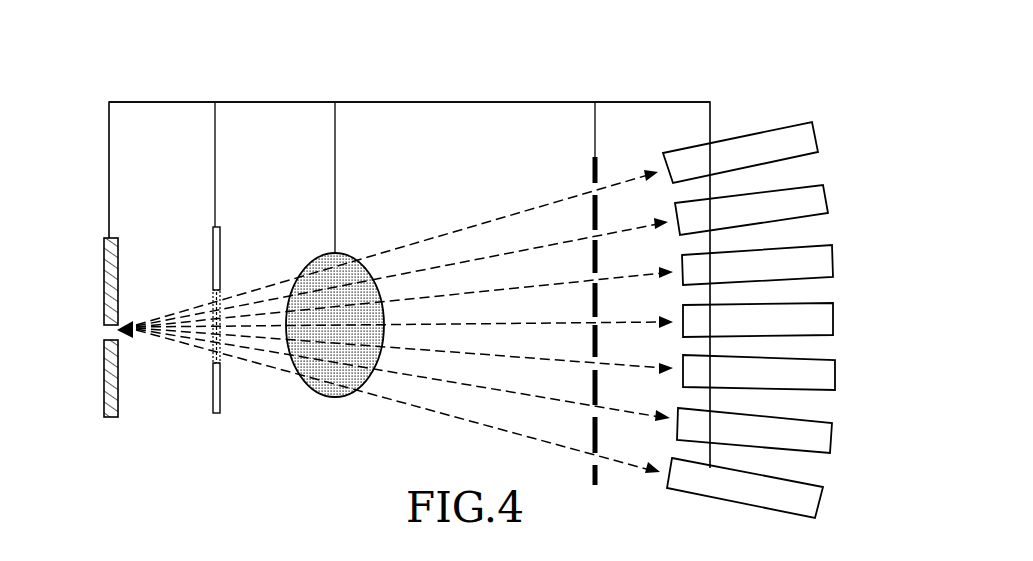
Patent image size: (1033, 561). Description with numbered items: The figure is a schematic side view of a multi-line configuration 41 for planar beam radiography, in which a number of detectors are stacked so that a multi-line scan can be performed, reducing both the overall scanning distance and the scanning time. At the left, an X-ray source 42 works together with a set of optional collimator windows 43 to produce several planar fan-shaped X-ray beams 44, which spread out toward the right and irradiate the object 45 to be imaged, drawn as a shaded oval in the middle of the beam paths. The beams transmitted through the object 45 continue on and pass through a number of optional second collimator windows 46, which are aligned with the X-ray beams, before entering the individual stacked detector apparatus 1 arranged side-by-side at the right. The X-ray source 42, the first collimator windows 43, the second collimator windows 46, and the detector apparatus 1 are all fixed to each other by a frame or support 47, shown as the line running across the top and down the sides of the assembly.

The detector apparatus 1 is at (770, 129).
The multi-line configuration 41 is at (158, 78).
The X-ray source 42 is at (104, 274).
The collimator windows 43 is at (220, 243).
The planar fan-shaped X-ray beams 44 is at (273, 370).
The object 45 is at (372, 383).
The second collimator windows 46 is at (592, 172).
The frame or support 47 is at (412, 101).